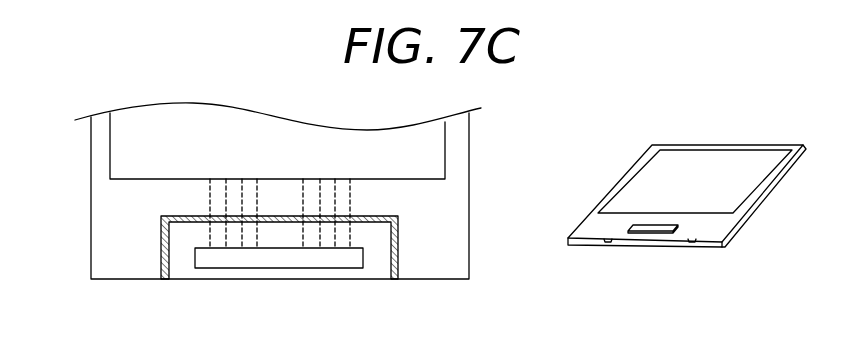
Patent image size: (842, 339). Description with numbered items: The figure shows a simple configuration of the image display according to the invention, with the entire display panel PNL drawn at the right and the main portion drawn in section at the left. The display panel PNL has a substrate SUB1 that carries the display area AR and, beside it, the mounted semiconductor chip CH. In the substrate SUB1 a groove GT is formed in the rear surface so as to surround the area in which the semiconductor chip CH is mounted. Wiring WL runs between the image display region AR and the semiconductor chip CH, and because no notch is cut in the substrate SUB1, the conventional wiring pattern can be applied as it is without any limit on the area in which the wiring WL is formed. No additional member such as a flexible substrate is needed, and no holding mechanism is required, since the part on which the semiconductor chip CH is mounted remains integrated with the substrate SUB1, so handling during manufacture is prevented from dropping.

The substrate SUB1 is at (464, 131).
The display area AR is at (451, 163).
The wiring WL is at (213, 197).
The groove GT is at (395, 280).
The semiconductor chip CH is at (276, 263).
The display panel PNL is at (714, 140).